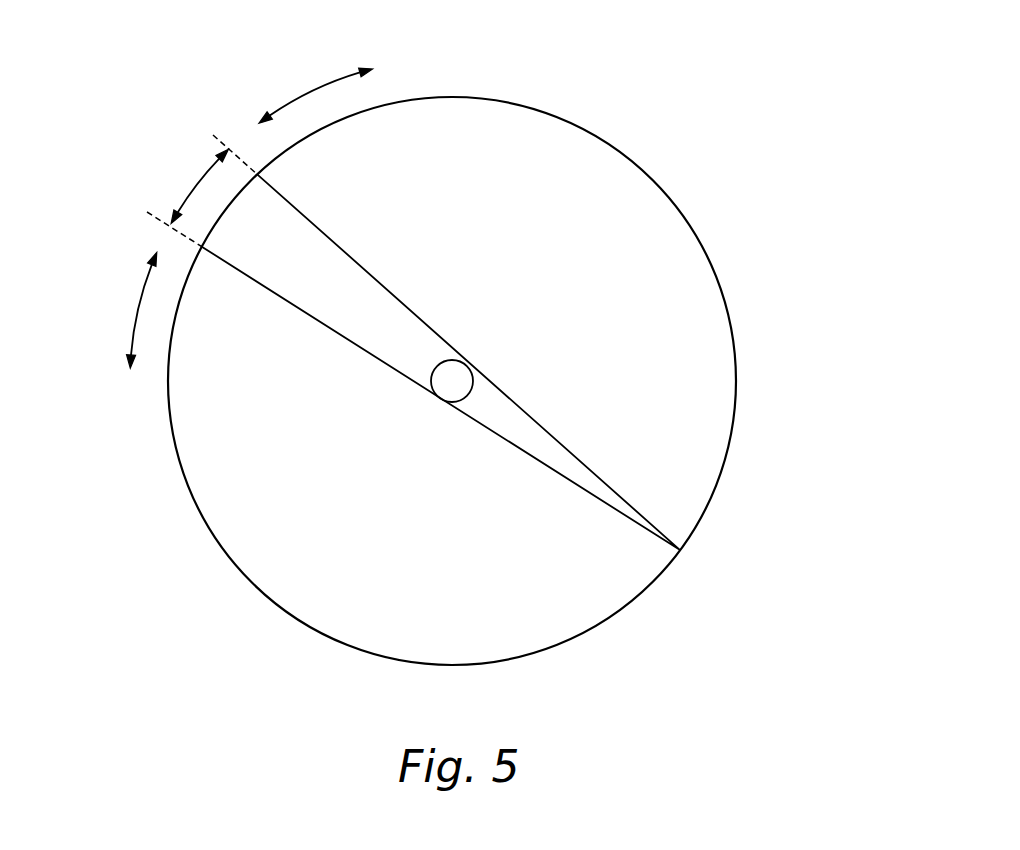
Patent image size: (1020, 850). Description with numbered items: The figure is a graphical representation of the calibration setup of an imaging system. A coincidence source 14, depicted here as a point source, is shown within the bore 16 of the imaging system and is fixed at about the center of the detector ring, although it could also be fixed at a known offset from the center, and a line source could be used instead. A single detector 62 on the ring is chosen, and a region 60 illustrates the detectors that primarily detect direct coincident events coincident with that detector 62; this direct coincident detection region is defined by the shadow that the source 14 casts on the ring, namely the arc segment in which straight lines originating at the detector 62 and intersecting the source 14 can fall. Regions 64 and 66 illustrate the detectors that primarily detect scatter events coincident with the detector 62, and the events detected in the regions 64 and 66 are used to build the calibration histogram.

The coincidence source 14 is at (463, 388).
The bore 16 is at (660, 185).
The region 60 is at (192, 182).
The detector 62 is at (690, 565).
The region 64 is at (311, 87).
The region 66 is at (138, 307).